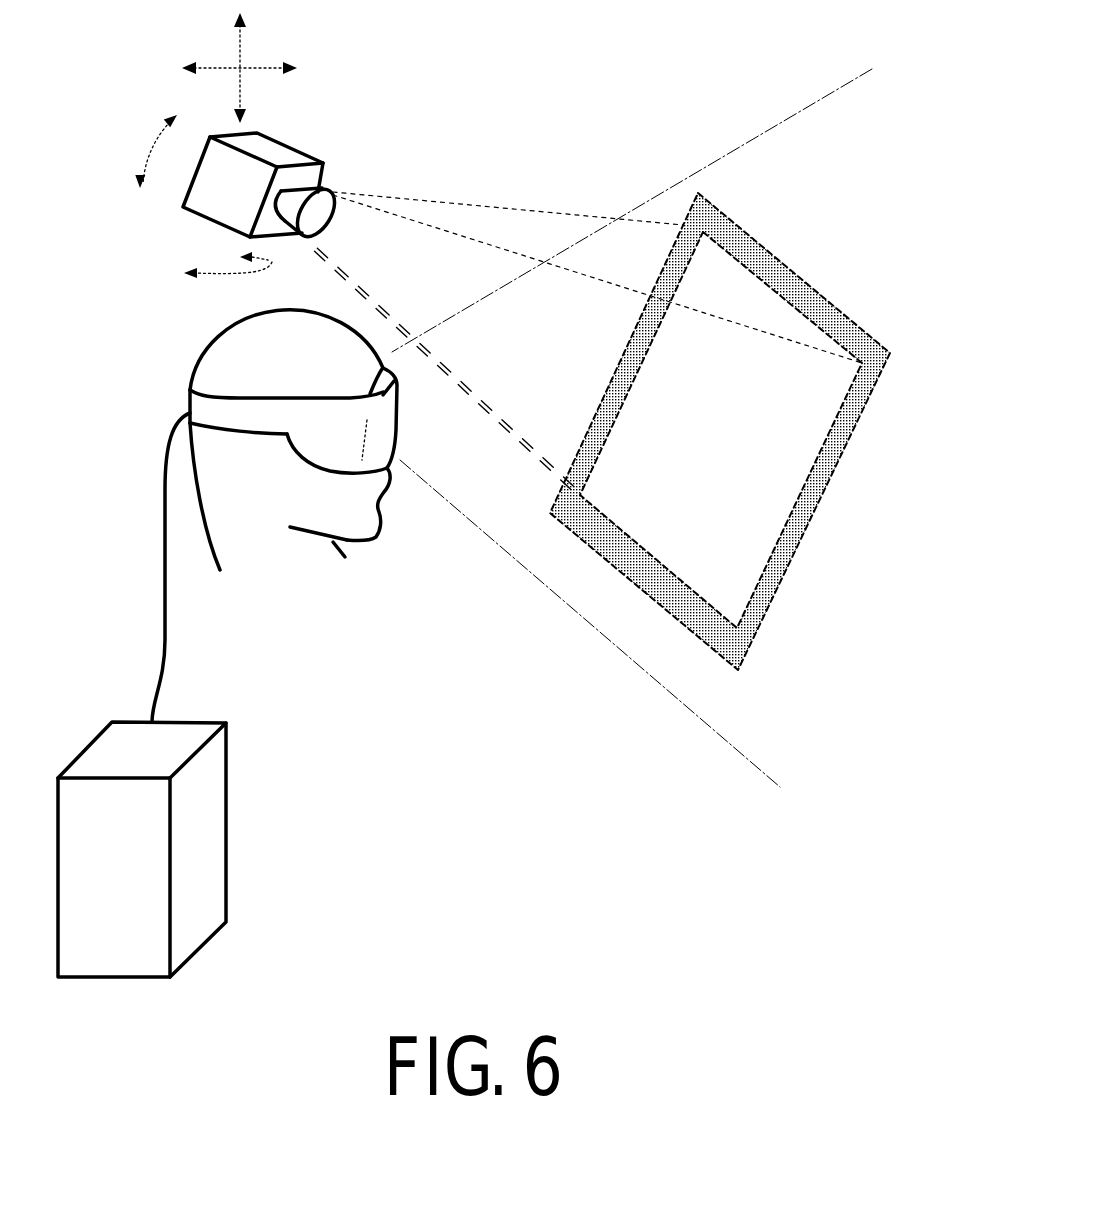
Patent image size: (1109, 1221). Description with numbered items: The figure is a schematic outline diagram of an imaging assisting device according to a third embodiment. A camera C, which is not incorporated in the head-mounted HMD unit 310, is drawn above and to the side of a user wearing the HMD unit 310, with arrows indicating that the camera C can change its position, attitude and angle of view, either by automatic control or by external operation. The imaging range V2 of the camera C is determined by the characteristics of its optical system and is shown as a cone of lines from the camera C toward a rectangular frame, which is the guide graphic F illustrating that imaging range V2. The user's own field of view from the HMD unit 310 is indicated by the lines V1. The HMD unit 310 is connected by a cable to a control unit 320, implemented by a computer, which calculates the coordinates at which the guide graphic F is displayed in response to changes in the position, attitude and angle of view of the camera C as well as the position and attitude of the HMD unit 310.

The camera C is at (277, 163).
The HMD unit 310 is at (188, 403).
The control unit 320 is at (188, 733).
The guide graphic F is at (733, 214).
The visual field of user V1 is at (740, 153).
The imaging range V2 is at (505, 207).